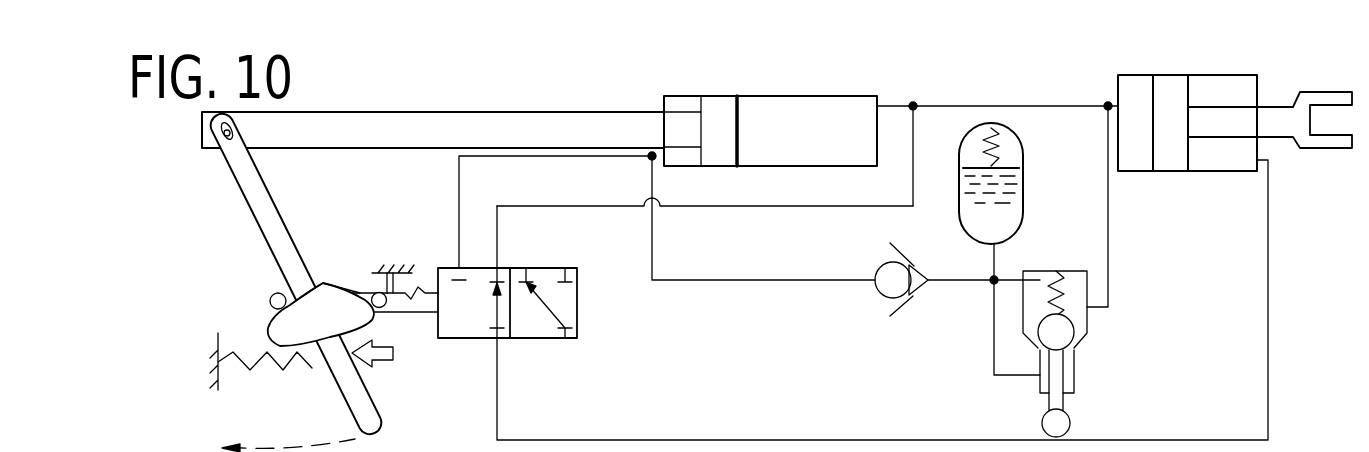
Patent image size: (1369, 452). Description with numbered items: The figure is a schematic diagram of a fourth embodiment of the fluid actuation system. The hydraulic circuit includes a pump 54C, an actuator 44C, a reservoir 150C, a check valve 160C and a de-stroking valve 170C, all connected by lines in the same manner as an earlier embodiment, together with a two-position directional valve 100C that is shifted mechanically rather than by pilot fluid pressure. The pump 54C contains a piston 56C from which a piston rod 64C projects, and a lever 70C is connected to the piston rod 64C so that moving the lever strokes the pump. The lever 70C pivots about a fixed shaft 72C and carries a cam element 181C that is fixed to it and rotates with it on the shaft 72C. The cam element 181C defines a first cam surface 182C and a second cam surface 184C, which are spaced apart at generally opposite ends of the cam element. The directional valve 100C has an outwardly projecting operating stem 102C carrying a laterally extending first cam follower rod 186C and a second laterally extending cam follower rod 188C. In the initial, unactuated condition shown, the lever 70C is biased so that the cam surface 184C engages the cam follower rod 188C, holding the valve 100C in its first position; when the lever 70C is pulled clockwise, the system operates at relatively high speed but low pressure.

The actuator 44C is at (1118, 75).
The pump 54C is at (878, 95).
The piston 56C is at (722, 115).
The piston rod 64C is at (571, 132).
The lever 70C is at (368, 421).
The fixed shaft 72C is at (312, 307).
The directional valve 100C is at (532, 340).
The operating stem 102C is at (407, 292).
The reservoir 150C is at (1020, 176).
The check valve 160C is at (918, 256).
The de-stroking valve 170C is at (1076, 345).
The cam element 181C is at (324, 284).
The first cam surface 182C is at (270, 328).
The second cam surface 184C is at (378, 320).
The first cam follower rod 186C is at (278, 293).
The second cam follower rod 188C is at (372, 296).